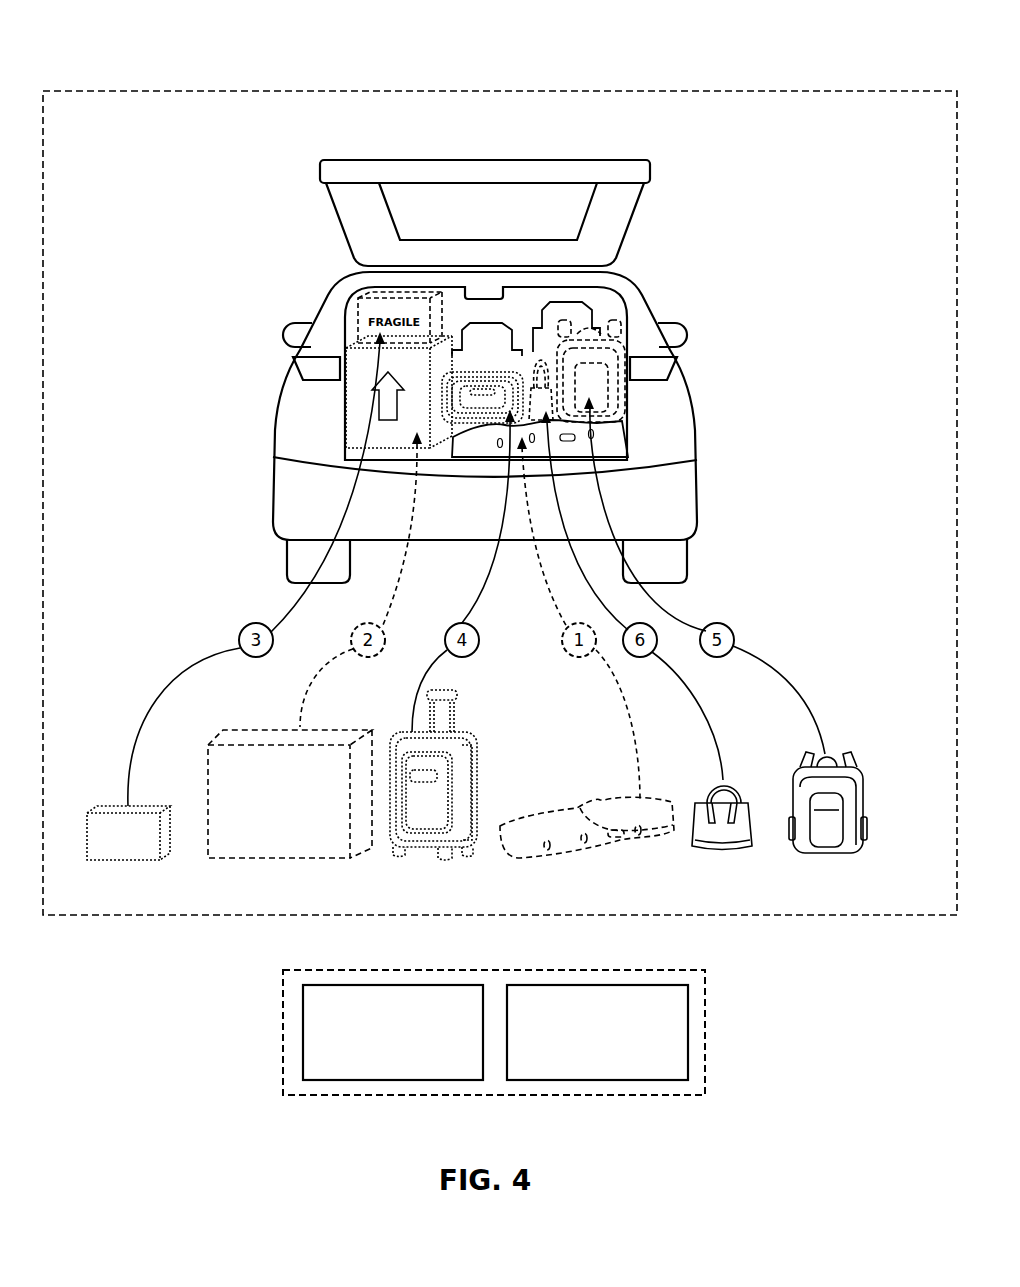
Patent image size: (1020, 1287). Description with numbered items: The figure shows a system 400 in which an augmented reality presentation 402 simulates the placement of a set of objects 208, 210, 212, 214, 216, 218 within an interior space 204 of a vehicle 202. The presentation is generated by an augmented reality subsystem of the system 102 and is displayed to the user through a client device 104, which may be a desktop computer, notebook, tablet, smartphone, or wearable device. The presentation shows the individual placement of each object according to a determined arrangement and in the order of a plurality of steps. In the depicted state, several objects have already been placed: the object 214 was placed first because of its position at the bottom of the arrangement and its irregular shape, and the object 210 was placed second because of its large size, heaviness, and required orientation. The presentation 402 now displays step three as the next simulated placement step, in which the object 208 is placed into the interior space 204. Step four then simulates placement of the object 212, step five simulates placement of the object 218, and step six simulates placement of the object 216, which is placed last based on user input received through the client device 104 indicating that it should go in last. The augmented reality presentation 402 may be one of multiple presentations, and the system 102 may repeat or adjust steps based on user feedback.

The system 400 is at (508, 60).
The augmented reality presentation 402 is at (500, 489).
The vehicle 202 is at (696, 394).
The interior space 204 is at (634, 451).
The object 208 is at (128, 849).
The object 210 is at (290, 811).
The object 212 is at (433, 791).
The object 214 is at (587, 844).
The object 216 is at (722, 839).
The object 218 is at (828, 822).
The system 102 is at (393, 1032).
The client device 104 is at (597, 1032).